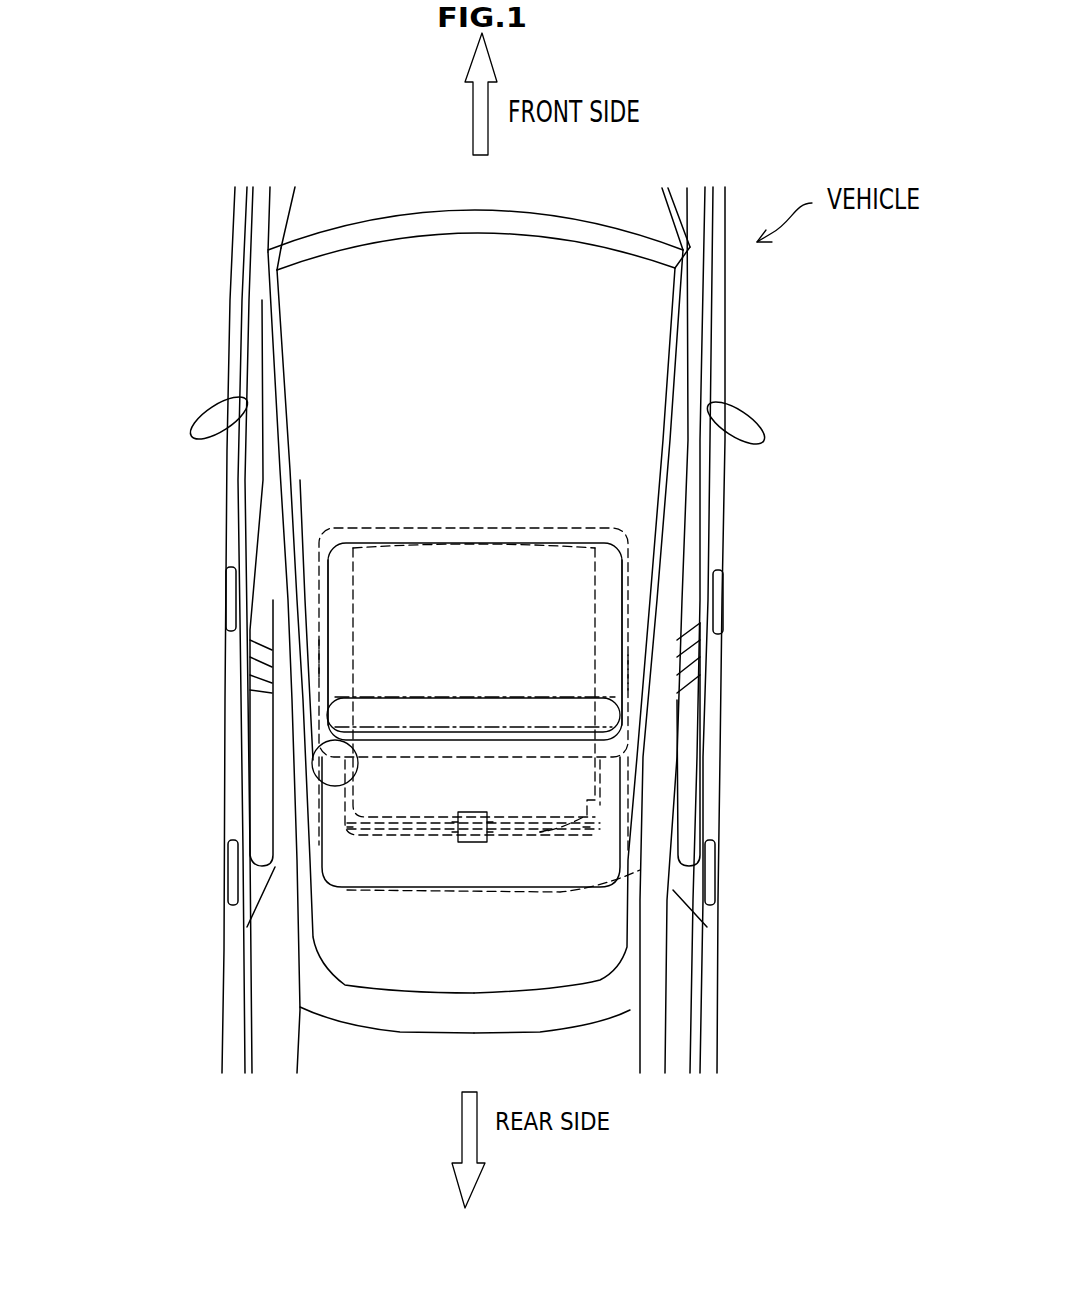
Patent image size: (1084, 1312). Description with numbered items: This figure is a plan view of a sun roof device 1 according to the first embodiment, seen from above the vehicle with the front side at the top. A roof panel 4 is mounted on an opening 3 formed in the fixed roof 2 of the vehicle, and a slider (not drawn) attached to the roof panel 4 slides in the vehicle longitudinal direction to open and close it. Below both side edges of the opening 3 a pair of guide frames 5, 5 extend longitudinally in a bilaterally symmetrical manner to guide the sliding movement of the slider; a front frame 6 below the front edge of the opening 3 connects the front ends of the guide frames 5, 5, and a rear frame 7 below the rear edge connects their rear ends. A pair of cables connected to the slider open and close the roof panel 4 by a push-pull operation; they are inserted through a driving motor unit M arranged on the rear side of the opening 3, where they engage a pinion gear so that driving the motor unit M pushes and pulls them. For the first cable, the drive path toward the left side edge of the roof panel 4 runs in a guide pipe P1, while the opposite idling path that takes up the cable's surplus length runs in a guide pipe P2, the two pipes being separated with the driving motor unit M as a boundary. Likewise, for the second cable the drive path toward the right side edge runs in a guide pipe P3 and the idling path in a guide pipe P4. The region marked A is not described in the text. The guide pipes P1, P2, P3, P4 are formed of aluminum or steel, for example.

The sun roof device 1 is at (640, 523).
The fixed roof 2 is at (315, 592).
The opening 3 is at (483, 641).
The roof panel 4 is at (623, 633).
The guide frame 5 is at (317, 650).
The front frame 6 is at (527, 528).
The rear frame 7 is at (510, 743).
The region A is at (312, 758).
The driving motor unit M is at (480, 843).
The guide pipe P1 is at (350, 830).
The guide pipe P2 is at (540, 832).
The guide pipe P3 is at (583, 827).
The guide pipe P4 is at (378, 840).